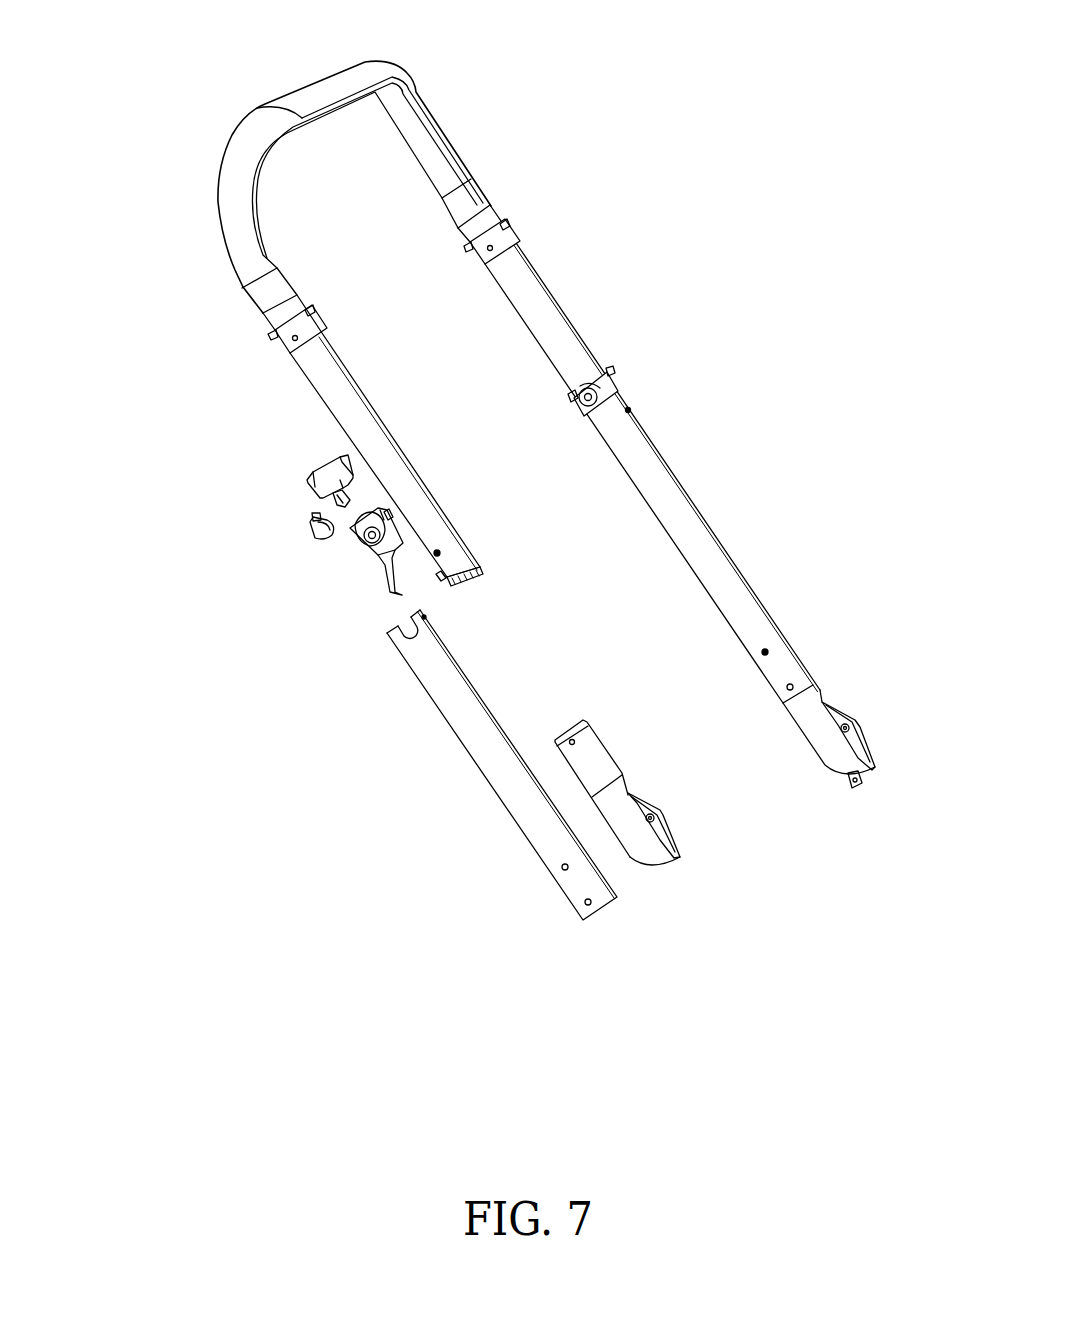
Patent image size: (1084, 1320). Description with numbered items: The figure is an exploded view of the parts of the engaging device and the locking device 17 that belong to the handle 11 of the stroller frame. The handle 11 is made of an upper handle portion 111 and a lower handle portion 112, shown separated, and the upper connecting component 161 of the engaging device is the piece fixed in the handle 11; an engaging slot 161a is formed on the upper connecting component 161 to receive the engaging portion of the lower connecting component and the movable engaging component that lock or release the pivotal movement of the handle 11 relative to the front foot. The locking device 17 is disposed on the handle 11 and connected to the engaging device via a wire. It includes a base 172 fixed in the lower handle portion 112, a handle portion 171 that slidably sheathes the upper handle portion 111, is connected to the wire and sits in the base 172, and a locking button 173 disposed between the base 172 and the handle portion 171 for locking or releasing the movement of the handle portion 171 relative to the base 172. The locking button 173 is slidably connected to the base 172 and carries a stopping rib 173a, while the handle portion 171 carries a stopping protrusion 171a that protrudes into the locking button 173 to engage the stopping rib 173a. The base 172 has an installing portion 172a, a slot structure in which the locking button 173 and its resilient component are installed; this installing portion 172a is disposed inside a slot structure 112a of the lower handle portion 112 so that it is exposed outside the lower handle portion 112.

The handle 11 is at (437, 607).
The upper handle portion 111 is at (437, 580).
The lower handle portion 112 is at (472, 764).
The slot structure 112a is at (410, 638).
The locking device 17 is at (320, 526).
The handle portion 171 is at (309, 464).
The stopping protrusion 171a is at (352, 493).
The base 172 is at (345, 554).
The installing portion 172a is at (390, 523).
The locking button 173 is at (246, 536).
The stopping rib 173a is at (313, 518).
The upper connecting component 161 is at (686, 849).
The engaging slot 161a is at (667, 823).